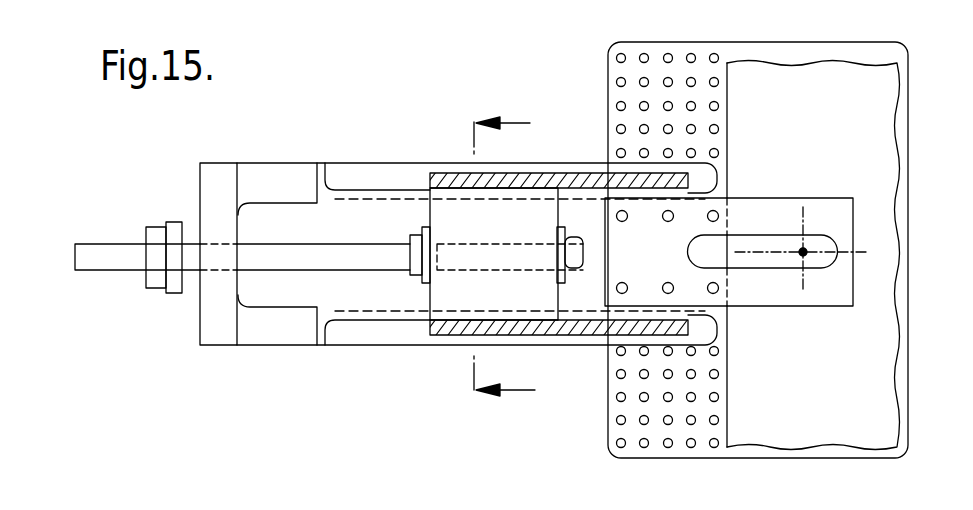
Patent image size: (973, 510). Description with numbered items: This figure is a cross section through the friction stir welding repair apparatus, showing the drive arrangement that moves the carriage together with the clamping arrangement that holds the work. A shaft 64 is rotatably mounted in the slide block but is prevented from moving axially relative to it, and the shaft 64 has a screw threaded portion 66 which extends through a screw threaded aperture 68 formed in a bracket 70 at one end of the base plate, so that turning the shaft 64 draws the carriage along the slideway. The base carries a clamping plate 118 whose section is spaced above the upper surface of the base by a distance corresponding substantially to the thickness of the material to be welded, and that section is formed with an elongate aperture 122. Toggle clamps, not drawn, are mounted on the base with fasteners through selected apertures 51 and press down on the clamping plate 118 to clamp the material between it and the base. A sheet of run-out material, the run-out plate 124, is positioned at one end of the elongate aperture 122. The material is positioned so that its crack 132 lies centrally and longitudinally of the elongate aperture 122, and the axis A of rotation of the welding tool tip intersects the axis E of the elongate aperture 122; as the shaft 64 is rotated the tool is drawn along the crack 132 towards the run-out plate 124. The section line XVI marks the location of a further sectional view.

The apertures 51 is at (618, 127).
The shaft 64 is at (265, 230).
The screw threaded portion 66 is at (360, 258).
The screw threaded aperture 68 is at (218, 270).
The bracket 70 is at (218, 178).
The clamping plate 118 is at (832, 293).
The elongate aperture 122 is at (763, 263).
The run-out plate 124 is at (724, 300).
The crack 132 is at (773, 250).
The axis of rotation of the tip A is at (806, 250).
The axis of the elongate slot E is at (840, 250).
The section line XVI- XVI is at (480, 258).